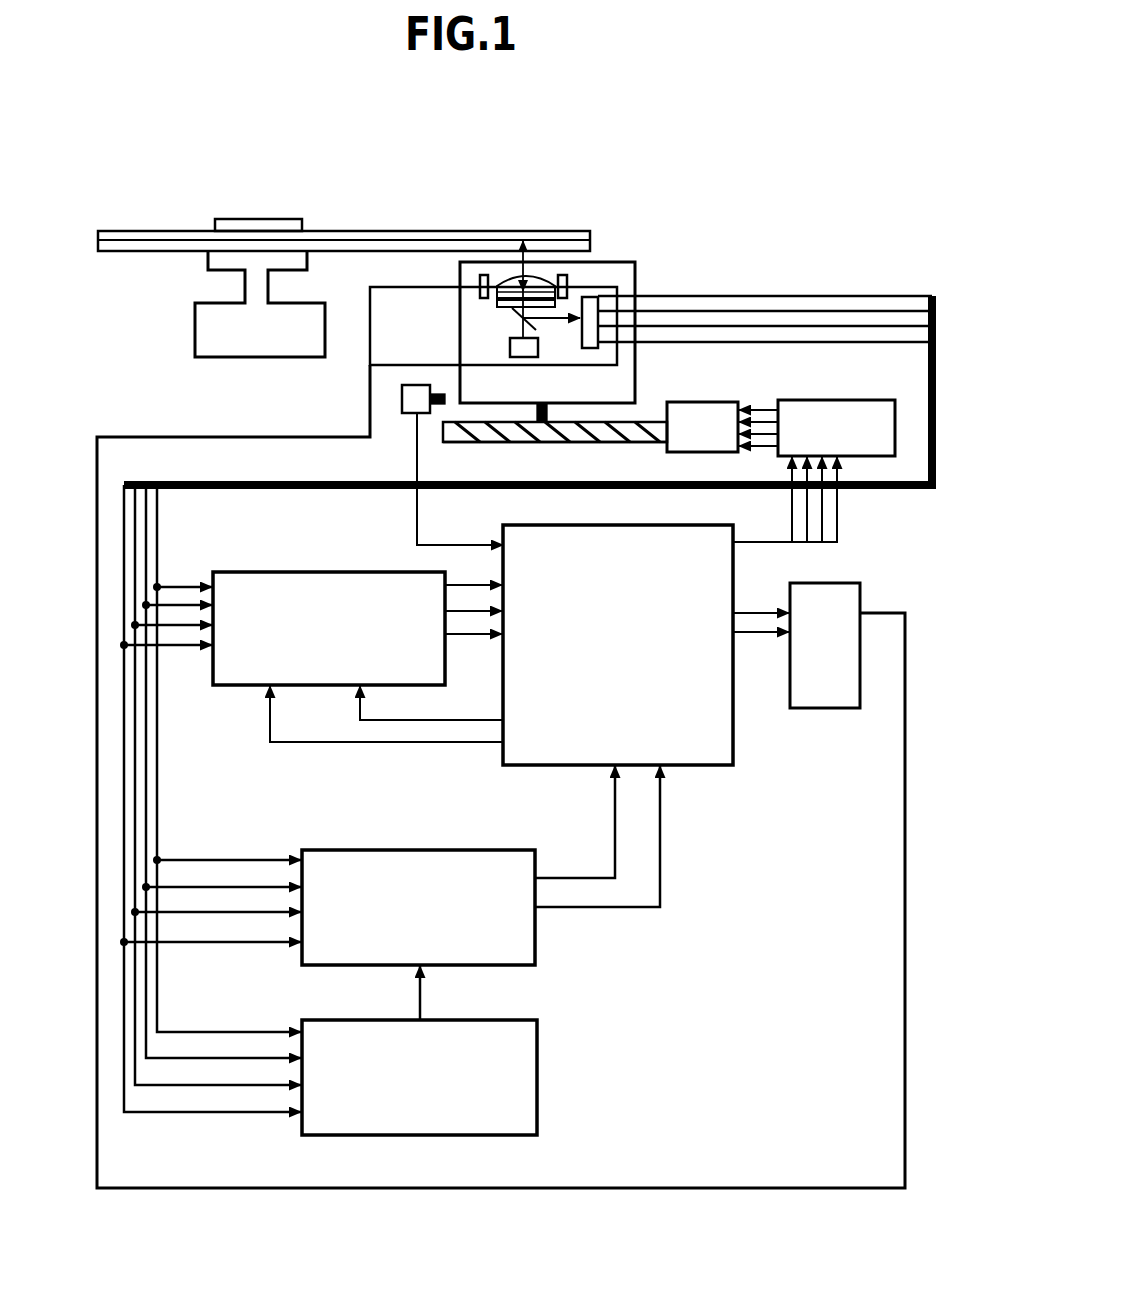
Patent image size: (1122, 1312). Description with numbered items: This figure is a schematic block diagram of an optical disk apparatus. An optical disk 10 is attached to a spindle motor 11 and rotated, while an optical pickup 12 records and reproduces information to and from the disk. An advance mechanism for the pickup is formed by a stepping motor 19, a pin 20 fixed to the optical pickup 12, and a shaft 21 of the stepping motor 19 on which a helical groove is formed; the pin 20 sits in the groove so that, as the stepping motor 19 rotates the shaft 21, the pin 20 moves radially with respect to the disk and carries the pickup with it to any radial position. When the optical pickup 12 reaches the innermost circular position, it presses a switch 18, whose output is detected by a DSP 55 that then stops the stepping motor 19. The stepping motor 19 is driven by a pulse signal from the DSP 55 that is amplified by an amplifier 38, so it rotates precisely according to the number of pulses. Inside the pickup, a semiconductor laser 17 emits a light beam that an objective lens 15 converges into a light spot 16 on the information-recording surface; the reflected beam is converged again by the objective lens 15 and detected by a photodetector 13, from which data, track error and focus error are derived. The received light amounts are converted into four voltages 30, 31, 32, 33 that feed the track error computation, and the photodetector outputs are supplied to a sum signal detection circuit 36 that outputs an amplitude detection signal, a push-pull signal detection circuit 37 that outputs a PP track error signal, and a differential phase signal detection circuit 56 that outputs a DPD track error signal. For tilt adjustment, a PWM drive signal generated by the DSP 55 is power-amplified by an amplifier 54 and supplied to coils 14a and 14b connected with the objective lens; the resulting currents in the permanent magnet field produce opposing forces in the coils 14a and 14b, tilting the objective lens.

The optical disk 10 is at (147, 231).
The spindle motor 11 is at (222, 358).
The optical pickup 12 is at (460, 283).
The photodetector 13 is at (602, 300).
The coil 14a is at (568, 280).
The coil 14b is at (484, 276).
The objective lens 15 is at (540, 273).
The light spot 16 is at (528, 232).
The semiconductor laser 17 is at (508, 342).
The switch 18 is at (402, 396).
The stepping motor 19 is at (700, 402).
The pin 20 is at (526, 440).
The shaft 21 is at (608, 443).
The voltage 30 is at (722, 296).
The voltage 31 is at (757, 311).
The voltage 32 is at (790, 326).
The voltage 33 is at (828, 342).
The sum signal detection circuit 36 is at (290, 572).
The push-pull signal detection circuit 37 is at (488, 850).
The amplifier 38 is at (806, 400).
The amplifier 54 is at (815, 708).
The DSP 55 is at (705, 766).
The differential phase signal detection circuit 56 is at (505, 1020).